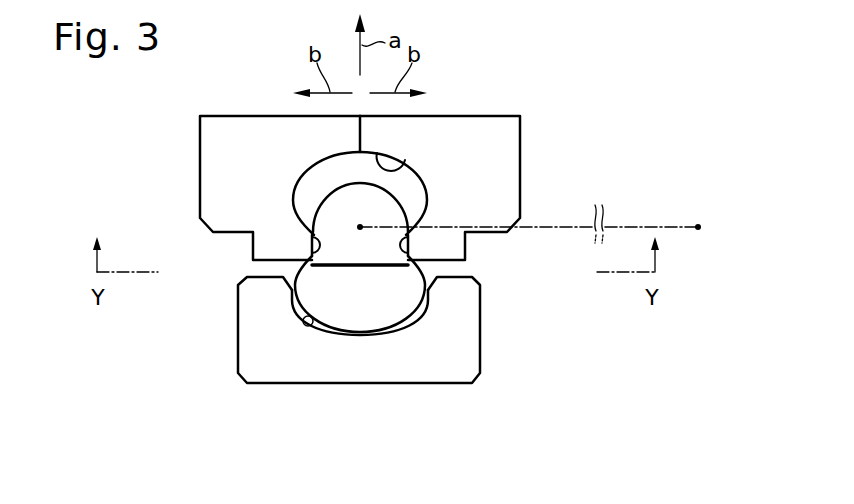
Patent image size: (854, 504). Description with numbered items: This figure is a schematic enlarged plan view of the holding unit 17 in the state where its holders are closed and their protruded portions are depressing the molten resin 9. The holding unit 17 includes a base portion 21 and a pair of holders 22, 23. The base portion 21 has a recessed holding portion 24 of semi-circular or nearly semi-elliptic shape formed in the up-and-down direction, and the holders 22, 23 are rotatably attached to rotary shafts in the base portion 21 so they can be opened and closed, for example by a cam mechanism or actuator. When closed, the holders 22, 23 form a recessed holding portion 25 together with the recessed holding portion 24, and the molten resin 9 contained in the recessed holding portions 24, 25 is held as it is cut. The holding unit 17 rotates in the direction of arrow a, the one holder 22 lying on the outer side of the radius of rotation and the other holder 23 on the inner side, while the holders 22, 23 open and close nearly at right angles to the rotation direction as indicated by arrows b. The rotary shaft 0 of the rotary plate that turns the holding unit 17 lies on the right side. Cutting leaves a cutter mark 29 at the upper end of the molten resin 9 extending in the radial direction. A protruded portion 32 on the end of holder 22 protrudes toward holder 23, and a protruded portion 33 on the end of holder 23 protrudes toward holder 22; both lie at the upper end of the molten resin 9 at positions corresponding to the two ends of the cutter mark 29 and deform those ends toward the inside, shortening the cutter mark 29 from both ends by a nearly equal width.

The holding unit 17 is at (402, 188).
The one holder 22 is at (215, 136).
The other holder 23 is at (495, 148).
The recessed holding portion 25 is at (405, 163).
The cutter mark 29 is at (363, 267).
The molten resin 9 is at (396, 298).
The protruded portion 32 is at (318, 243).
The protruded portion 33 is at (420, 247).
The recessed holding portion 24 is at (313, 330).
The base portion 21 is at (437, 377).
The rotary shaft 0 is at (532, 218).